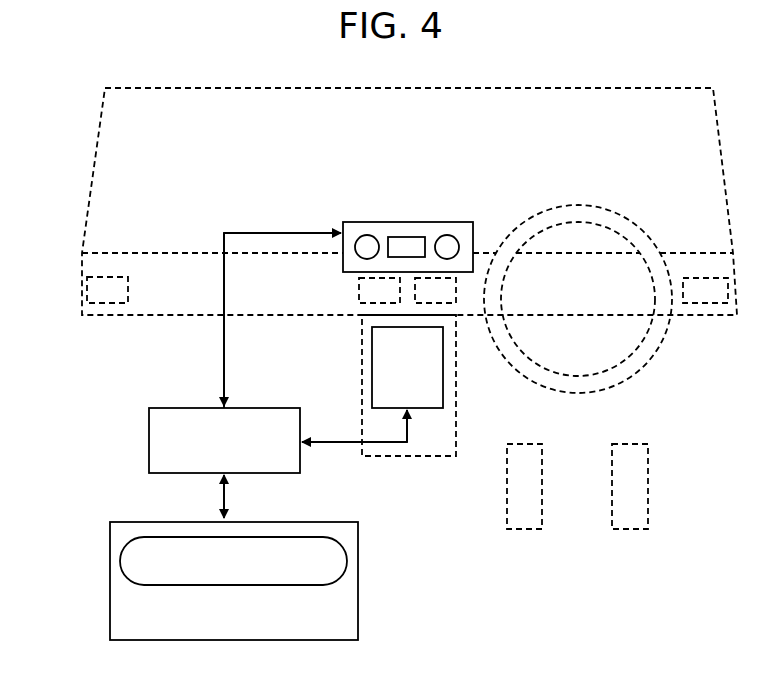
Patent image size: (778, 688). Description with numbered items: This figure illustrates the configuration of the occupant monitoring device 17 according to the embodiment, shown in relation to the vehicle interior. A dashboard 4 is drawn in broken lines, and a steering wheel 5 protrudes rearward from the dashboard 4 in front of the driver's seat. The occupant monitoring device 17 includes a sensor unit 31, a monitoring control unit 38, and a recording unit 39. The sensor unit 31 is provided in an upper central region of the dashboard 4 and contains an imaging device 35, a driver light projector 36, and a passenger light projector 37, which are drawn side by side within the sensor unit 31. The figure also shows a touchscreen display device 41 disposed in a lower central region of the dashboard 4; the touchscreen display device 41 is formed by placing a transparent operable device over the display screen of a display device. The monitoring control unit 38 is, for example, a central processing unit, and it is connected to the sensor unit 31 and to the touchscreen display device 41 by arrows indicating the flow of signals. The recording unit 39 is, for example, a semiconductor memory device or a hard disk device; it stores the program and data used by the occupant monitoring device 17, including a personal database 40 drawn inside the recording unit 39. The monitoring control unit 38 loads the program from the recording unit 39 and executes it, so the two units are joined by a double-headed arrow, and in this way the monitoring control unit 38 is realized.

The dashboard 4 is at (170, 252).
The steering wheel 5 is at (653, 370).
The occupant monitoring device 17 is at (103, 386).
The sensor unit 31 is at (490, 204).
The imaging device 35 is at (410, 237).
The driver light projector 36 is at (367, 235).
The passenger light projector 37 is at (450, 235).
The monitoring control unit 38 is at (149, 440).
The recording unit 39 is at (358, 625).
The personal database 40 is at (358, 548).
The touchscreen display device 41 is at (427, 347).